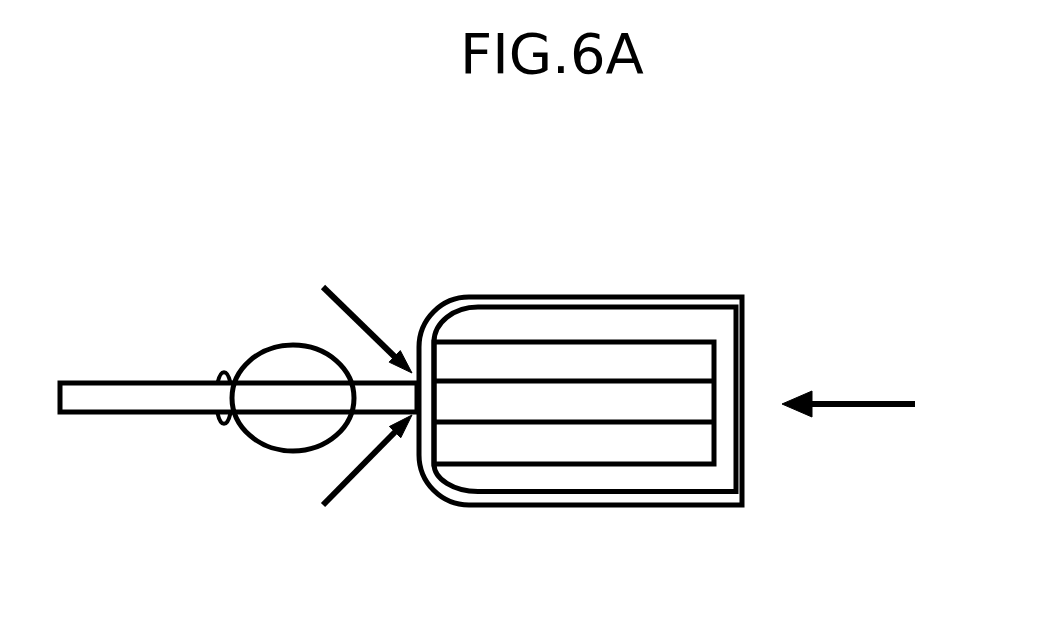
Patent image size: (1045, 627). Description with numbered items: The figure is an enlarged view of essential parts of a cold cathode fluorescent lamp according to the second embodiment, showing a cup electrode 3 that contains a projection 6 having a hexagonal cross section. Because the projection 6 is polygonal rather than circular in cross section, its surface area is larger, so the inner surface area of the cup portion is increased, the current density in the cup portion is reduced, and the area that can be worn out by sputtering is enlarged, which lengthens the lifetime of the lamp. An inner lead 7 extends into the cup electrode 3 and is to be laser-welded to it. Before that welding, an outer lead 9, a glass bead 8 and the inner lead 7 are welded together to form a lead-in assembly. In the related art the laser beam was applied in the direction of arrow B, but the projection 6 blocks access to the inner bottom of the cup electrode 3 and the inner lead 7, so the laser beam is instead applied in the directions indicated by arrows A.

The cup electrode 3 is at (605, 293).
The projection 6 is at (513, 403).
The inner lead 7 is at (387, 397).
The glass bead 8 is at (292, 343).
The outer lead 9 is at (100, 392).
The arrows A is at (372, 345).
The arrow B is at (850, 403).